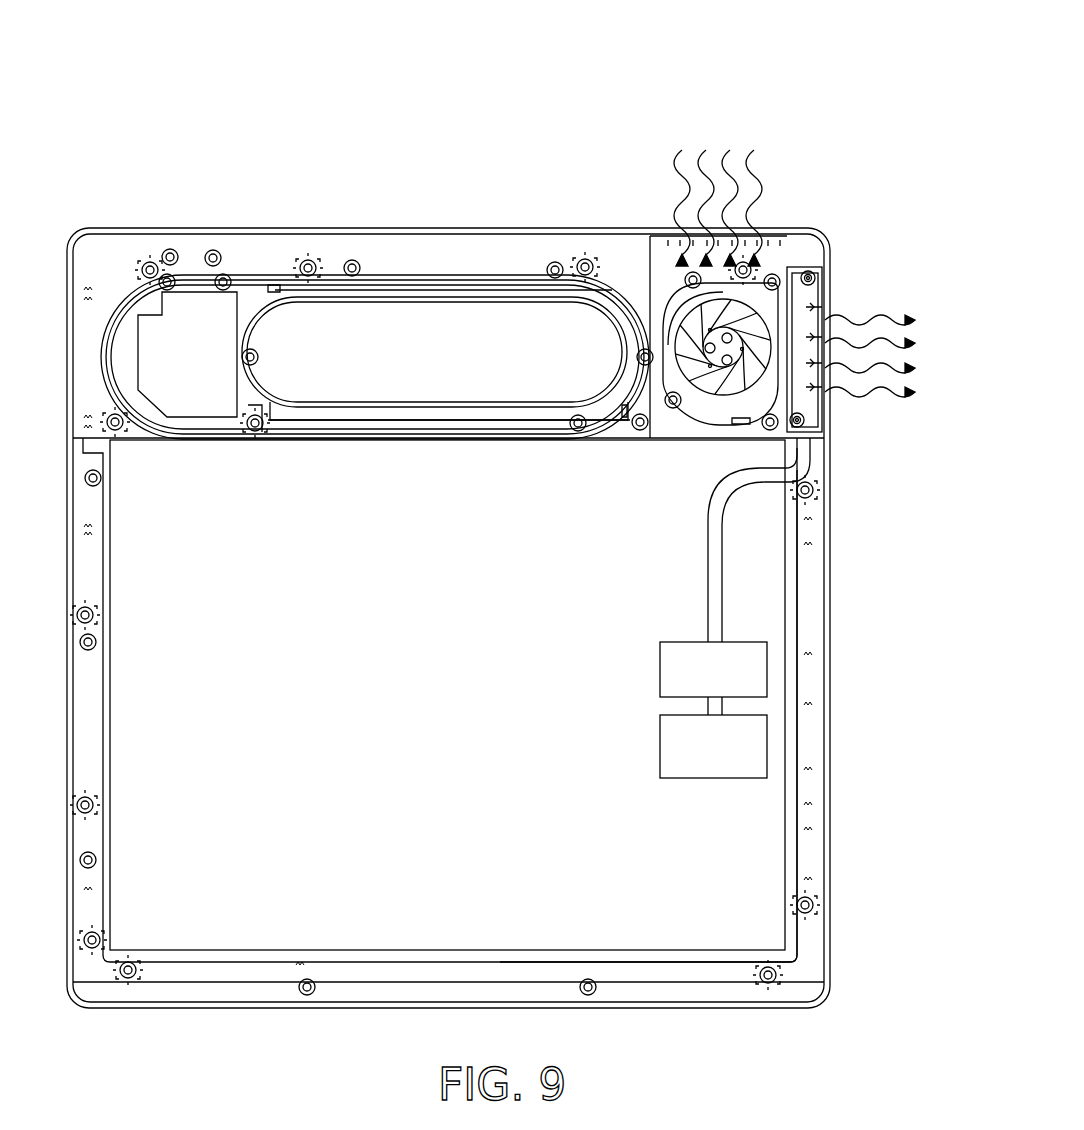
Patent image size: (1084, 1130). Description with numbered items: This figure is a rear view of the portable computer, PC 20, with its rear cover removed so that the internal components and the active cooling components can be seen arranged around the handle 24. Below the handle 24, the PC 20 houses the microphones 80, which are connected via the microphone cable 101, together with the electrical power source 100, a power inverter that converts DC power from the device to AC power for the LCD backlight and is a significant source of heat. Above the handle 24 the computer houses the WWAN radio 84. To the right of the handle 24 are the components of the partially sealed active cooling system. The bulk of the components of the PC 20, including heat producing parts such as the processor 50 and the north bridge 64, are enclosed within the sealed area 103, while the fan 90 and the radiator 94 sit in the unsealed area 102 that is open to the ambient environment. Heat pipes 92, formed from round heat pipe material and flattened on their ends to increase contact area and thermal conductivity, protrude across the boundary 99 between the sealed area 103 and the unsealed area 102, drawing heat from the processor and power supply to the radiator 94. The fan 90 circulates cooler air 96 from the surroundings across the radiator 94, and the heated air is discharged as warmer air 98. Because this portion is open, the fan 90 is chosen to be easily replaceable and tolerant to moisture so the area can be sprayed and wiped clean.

The PC 20 is at (676, 66).
The handle 24 is at (300, 305).
The processor 50 is at (713, 669).
The north bridge 64 is at (713, 746).
The microphones 80 is at (268, 433).
The WWAN radio 84 is at (445, 292).
The fan 90 is at (748, 318).
The heat pipes 92 is at (718, 570).
The radiator 94 is at (825, 426).
The cooler air 96 is at (706, 157).
The warmer air 98 is at (906, 318).
The boundary 99 is at (648, 247).
The power source 100 is at (393, 421).
The microphone cable 101 is at (333, 406).
The unsealed area 102 is at (797, 240).
The sealed area 103 is at (755, 866).